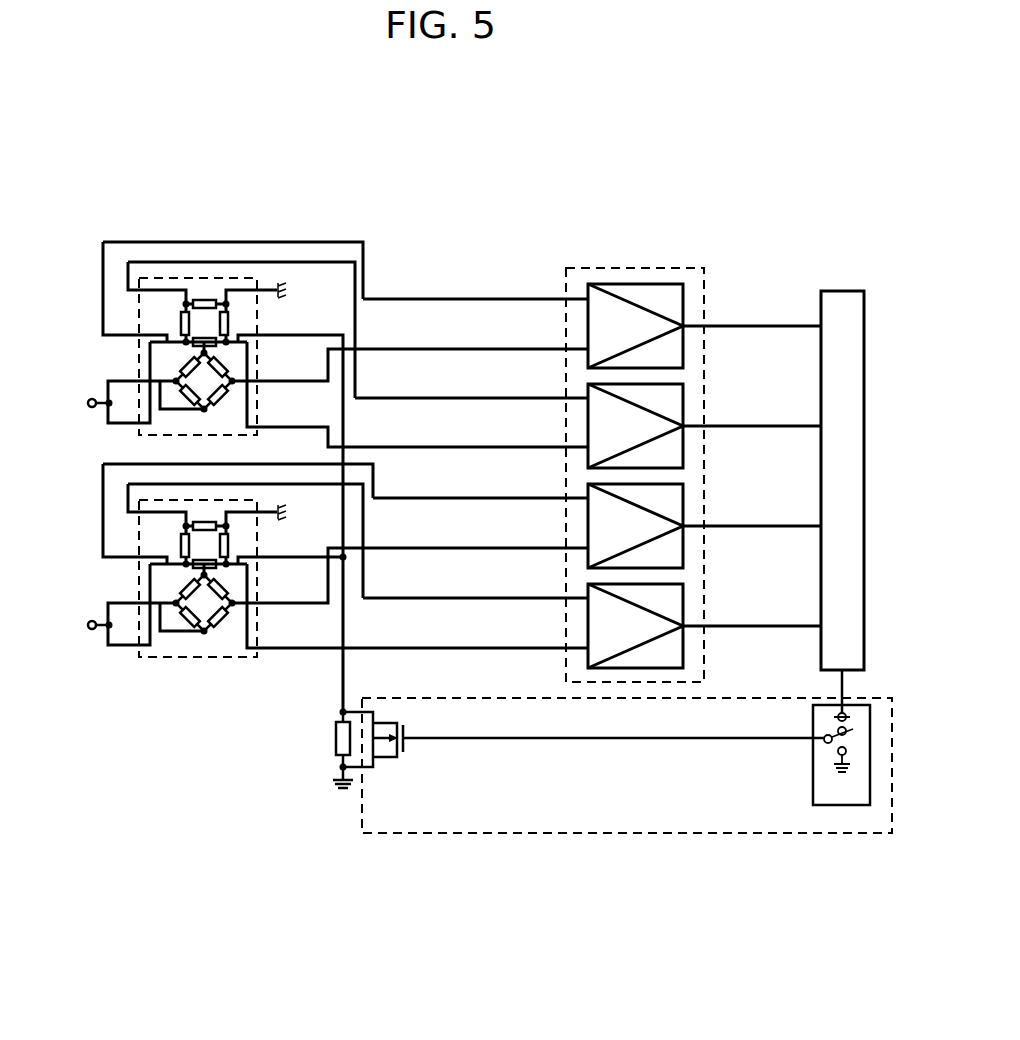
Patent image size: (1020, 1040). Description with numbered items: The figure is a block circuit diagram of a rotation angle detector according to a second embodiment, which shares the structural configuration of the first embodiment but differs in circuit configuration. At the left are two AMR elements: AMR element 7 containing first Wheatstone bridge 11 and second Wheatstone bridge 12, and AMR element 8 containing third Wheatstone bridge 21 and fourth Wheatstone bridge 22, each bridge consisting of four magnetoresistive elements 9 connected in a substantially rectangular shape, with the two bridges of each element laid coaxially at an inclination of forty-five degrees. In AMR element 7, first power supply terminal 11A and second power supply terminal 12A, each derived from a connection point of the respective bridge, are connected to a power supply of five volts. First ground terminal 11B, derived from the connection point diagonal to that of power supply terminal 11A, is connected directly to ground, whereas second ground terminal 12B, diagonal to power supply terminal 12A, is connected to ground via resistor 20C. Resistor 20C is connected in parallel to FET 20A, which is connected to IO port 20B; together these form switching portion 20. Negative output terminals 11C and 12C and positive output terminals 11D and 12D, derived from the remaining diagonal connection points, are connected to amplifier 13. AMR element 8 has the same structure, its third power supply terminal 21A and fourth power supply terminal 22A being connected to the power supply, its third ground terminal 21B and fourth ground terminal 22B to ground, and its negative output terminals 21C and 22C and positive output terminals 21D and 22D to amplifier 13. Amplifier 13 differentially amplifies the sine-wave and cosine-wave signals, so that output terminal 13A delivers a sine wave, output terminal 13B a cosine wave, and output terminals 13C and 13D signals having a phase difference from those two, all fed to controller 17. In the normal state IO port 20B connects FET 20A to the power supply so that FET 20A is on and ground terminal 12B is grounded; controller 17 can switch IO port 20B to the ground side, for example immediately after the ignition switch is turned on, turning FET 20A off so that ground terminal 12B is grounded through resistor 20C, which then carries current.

The AMR element 7 is at (148, 277).
The AMR element 8 is at (190, 658).
The magnetoresistive element 9 is at (200, 300).
The first Wheatstone bridge 11 is at (175, 323).
The first power supply terminal 11A is at (120, 425).
The first ground terminal 11B is at (235, 290).
The first negative output terminal 11C is at (436, 397).
The first positive output terminal 11D is at (436, 446).
The second Wheatstone bridge 12 is at (200, 410).
The second power supply terminal 12A is at (127, 381).
The second ground terminal 12B is at (263, 333).
The second negative output terminal 12C is at (436, 298).
The second positive output terminal 12D is at (436, 348).
The amplifier 13 is at (615, 266).
The output terminal 13A is at (723, 323).
The output terminal 13B is at (723, 425).
The output terminal 13C is at (723, 525).
The output terminal 13D is at (723, 625).
The controller 17 is at (852, 290).
The switching portion 20 is at (730, 836).
The FET 20A is at (383, 760).
The IO port 20B is at (813, 760).
The resistor 20C is at (334, 742).
The third Wheatstone bridge 21 is at (175, 545).
The third power supply terminal 21A is at (124, 650).
The third ground terminal 21B is at (263, 512).
The third negative output terminal 21C is at (436, 597).
The third positive output terminal 21D is at (436, 647).
The fourth Wheatstone bridge 22 is at (215, 630).
The fourth power supply terminal 22A is at (127, 603).
The fourth ground terminal 22B is at (282, 558).
The fourth negative output terminal 22C is at (436, 497).
The fourth positive output terminal 22D is at (436, 547).